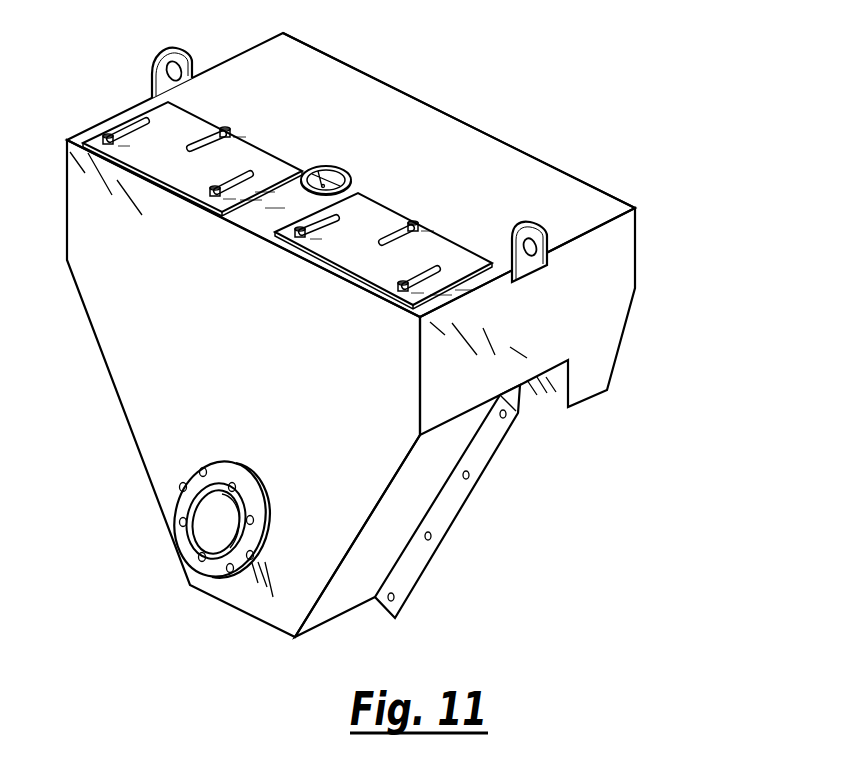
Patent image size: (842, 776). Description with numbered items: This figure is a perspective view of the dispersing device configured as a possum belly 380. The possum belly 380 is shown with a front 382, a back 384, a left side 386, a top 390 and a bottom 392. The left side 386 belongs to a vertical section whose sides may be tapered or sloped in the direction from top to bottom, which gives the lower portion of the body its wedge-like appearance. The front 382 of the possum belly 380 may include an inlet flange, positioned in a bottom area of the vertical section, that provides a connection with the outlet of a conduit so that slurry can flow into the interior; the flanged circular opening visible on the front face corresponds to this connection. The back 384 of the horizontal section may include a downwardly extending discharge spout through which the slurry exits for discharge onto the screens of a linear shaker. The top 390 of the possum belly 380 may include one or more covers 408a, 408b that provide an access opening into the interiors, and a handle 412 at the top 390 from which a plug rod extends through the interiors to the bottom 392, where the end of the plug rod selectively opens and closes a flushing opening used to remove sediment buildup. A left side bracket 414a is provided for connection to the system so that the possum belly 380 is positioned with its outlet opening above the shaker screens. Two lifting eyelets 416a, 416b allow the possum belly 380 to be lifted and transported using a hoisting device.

The possum belly 380 is at (376, 327).
The front 382 is at (158, 362).
The back 384 is at (520, 152).
The left side 386 is at (580, 298).
The top 390 is at (373, 118).
The bottom 392 is at (258, 622).
The cover 408a is at (378, 222).
The cover 408b is at (158, 148).
The handle 412 is at (320, 167).
The left side bracket 414a is at (462, 498).
The lifting eyelet 416a is at (168, 47).
The lifting eyelet 416b is at (540, 227).